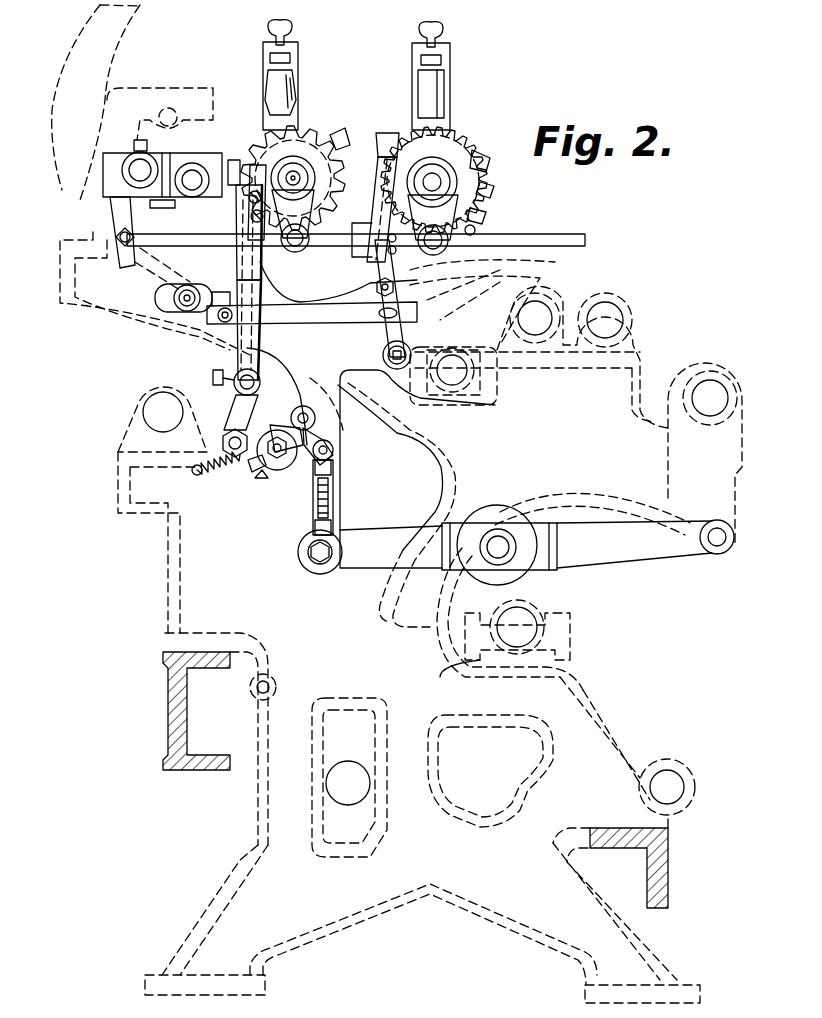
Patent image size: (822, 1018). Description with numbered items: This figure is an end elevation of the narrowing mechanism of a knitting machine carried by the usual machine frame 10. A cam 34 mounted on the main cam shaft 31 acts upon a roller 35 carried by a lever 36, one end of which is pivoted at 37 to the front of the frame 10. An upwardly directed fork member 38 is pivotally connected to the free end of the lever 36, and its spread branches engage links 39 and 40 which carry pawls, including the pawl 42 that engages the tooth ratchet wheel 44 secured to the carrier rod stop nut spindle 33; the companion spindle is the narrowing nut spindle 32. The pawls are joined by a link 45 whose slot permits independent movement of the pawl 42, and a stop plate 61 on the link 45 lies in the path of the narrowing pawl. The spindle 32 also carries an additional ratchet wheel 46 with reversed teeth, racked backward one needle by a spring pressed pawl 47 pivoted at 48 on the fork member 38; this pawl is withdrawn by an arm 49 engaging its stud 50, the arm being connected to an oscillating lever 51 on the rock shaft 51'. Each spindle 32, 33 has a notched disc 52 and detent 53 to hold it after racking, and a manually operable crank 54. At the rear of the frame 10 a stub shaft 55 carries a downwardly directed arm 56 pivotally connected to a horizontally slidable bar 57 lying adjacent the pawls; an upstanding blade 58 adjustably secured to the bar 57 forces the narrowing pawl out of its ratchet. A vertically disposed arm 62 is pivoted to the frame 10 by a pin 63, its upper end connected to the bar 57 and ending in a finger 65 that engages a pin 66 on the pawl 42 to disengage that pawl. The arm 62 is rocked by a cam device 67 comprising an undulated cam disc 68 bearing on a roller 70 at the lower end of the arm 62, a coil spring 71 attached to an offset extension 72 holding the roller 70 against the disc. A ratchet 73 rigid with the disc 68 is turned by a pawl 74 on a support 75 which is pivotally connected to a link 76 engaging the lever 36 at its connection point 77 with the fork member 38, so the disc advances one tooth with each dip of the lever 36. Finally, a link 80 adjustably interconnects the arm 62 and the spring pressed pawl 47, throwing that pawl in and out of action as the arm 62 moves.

The machine frame 10 is at (580, 720).
The main cam shaft 31 is at (527, 638).
The narrowing nut spindle 32 is at (434, 180).
The carrier rod stop nut spindle 33 is at (300, 148).
The cam 34 is at (540, 615).
The roller 35 is at (492, 510).
The lever 36 is at (640, 555).
The pivot 37 is at (720, 545).
The fork member 38 is at (333, 503).
The link 39 is at (484, 165).
The link 40 is at (294, 176).
The pawl 42 is at (254, 190).
The tooth ratchet wheel 44 is at (252, 165).
The link 45 is at (352, 240).
The additional ratchet wheel 46 is at (488, 190).
The spring pressed pawl 47 is at (385, 335).
The pivot 48 is at (415, 350).
The arm 49 is at (175, 312).
The stud 50 is at (400, 292).
The oscillating lever 51 is at (146, 246).
The rock shaft 51' is at (160, 212).
The notched disc 52 is at (340, 148).
The detent 53 is at (272, 128).
The crank 54 is at (476, 222).
The stub shaft 55 is at (135, 165).
The arm 56 is at (118, 195).
The slidable bar 57 is at (563, 242).
The blade 58 is at (378, 146).
The stop plate 61 is at (370, 218).
The arm 62 is at (230, 362).
The pin 63 is at (228, 382).
The finger 65 is at (255, 205).
The pin 66 is at (228, 172).
The cam device 67 is at (258, 478).
The undulated cam disc 68 is at (277, 471).
The roller 70 is at (228, 435).
The coil spring 71 is at (250, 467).
The offset extension 72 is at (196, 468).
The ratchet 73 is at (290, 420).
The pawl 74 is at (300, 408).
The support 75 is at (321, 438).
The link 76 is at (329, 505).
The connection point 77 is at (318, 548).
The link 80 is at (297, 312).